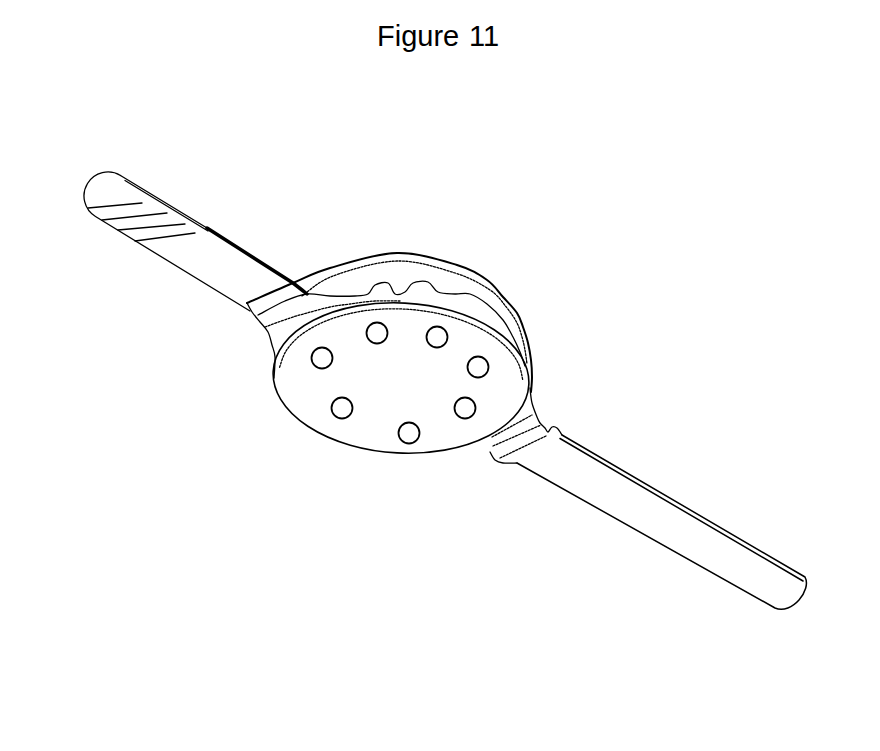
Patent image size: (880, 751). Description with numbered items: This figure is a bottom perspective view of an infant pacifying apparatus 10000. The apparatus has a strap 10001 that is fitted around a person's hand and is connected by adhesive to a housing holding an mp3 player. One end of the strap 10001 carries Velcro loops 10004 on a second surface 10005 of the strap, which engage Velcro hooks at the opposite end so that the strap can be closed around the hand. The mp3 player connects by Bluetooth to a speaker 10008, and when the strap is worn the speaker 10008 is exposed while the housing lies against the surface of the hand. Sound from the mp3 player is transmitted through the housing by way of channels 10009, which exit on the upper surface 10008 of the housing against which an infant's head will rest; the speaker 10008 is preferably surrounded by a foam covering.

The infant pacifying apparatus 10000 is at (598, 397).
The strap 10001 is at (227, 283).
The Velcro loops 10004 is at (138, 232).
The second surface 10005 is at (264, 270).
The speaker 10008 is at (447, 383).
The channels 10009 is at (408, 443).